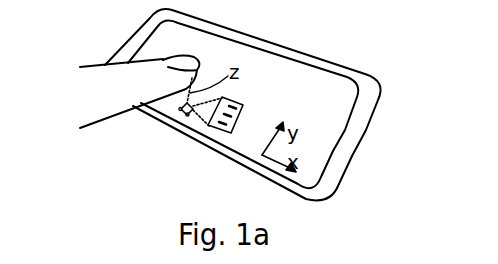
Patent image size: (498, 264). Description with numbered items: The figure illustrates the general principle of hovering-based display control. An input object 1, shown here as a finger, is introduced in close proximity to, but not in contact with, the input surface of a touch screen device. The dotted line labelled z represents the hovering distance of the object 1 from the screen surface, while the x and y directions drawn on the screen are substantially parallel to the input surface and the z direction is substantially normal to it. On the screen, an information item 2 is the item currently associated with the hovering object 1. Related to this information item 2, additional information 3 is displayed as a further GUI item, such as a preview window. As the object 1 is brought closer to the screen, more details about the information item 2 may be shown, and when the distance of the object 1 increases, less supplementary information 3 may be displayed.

The input object 1 is at (93, 77).
The information item 2 is at (182, 117).
The additional information 3 is at (222, 134).